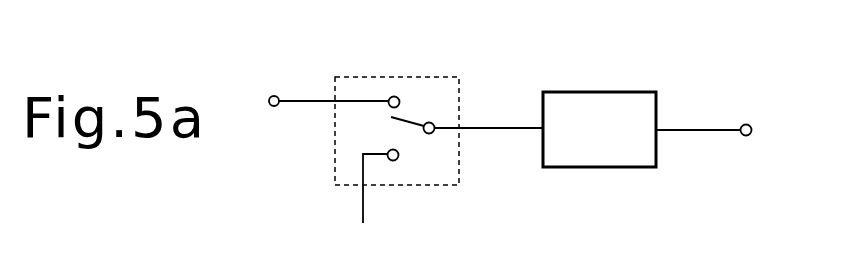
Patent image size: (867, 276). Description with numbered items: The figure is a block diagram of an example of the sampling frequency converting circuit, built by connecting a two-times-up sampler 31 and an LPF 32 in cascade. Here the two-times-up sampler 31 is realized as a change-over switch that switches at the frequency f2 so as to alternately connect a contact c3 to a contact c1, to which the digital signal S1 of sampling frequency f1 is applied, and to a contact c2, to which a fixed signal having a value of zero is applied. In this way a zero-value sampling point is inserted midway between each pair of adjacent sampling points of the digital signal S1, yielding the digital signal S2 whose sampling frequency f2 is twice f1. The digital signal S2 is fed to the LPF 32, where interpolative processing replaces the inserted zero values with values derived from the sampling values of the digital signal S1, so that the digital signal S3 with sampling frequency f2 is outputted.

The two-times-up sampler 31 is at (417, 77).
The LPF 32 is at (563, 92).
The contact c1 is at (395, 96).
The contact c2 is at (396, 160).
The contact c3 is at (433, 123).
The digital signal S1 is at (308, 113).
The digital signal S2 is at (493, 130).
The digital signal S3 is at (729, 153).